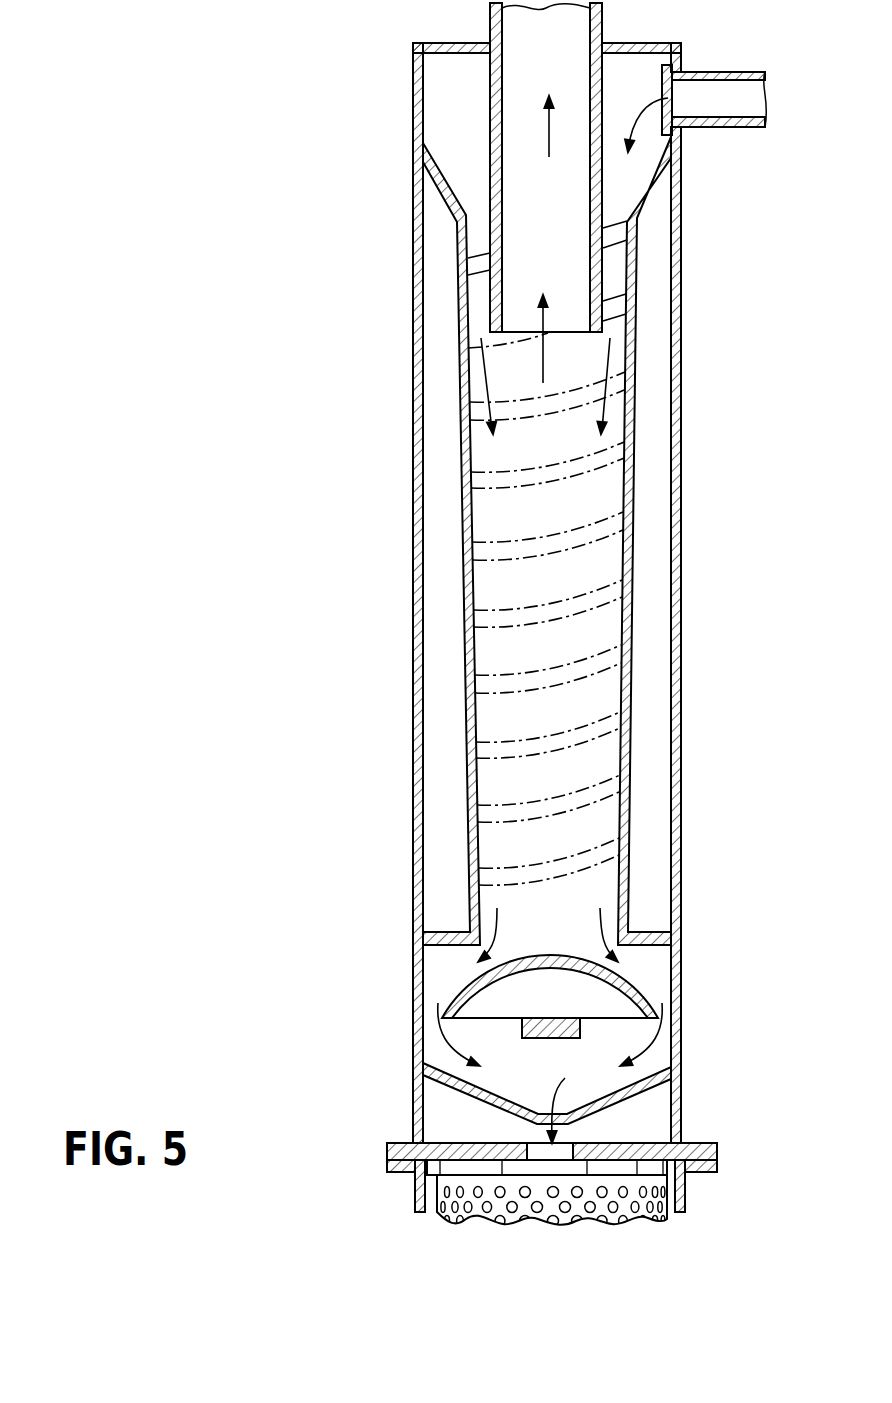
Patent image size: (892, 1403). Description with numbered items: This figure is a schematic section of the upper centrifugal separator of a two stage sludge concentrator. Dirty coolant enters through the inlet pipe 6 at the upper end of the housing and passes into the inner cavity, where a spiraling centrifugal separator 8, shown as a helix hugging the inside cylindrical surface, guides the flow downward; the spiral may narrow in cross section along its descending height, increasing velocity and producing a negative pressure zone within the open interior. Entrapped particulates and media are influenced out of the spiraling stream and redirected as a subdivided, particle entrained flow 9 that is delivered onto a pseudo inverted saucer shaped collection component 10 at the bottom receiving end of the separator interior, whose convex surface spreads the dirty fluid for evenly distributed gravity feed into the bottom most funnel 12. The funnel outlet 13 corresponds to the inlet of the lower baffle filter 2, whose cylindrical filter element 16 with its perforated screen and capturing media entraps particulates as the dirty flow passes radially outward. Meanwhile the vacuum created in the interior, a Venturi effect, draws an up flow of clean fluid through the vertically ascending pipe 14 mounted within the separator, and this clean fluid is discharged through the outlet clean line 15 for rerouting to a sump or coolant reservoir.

The lower baffle filter 2 is at (416, 1188).
The pipe 6 is at (720, 87).
The spiraling centrifugal separator 8 is at (472, 484).
The subdivided particle entrained flow 9 is at (465, 995).
The inverted saucer shaped collection component 10 is at (640, 1002).
The funnel 12 is at (452, 1082).
The outlet 13 is at (568, 1117).
The vertically ascending pipe 14 is at (492, 162).
The outlet clean line 15 is at (512, 30).
The cylindrical filter element 16 is at (552, 1206).